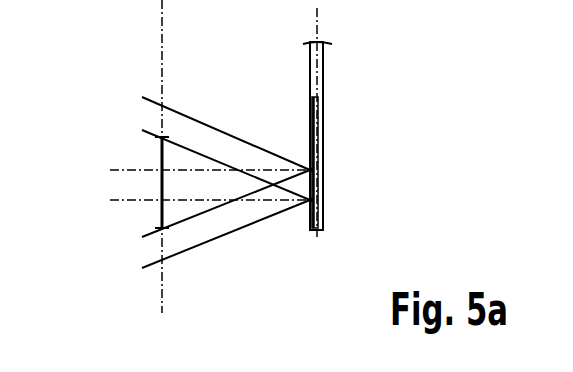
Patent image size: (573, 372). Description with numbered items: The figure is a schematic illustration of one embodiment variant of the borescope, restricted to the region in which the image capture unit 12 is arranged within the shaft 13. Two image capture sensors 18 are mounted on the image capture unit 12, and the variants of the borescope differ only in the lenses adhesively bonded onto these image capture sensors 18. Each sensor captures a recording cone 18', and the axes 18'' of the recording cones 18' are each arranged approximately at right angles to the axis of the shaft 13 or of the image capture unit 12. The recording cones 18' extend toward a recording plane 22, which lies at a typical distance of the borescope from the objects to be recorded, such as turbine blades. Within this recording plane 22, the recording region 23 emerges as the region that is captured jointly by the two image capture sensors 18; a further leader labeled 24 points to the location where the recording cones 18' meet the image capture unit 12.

The image capture unit 12 is at (318, 108).
The shaft 13 is at (323, 58).
The image capture sensors 18 is at (369, 181).
The recording cones 18' is at (226, 192).
The axes of the recording cones 18'' is at (174, 190).
The recording plane 22 is at (162, 42).
The recording region 23 is at (160, 188).
The spot on detector 24 is at (310, 200).